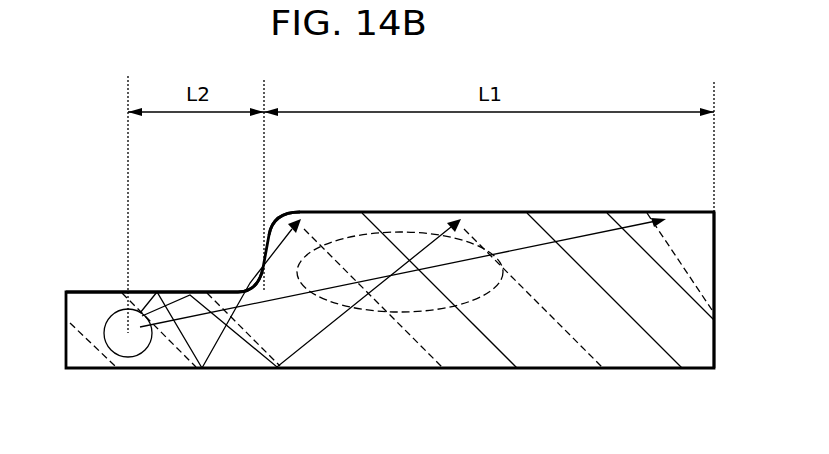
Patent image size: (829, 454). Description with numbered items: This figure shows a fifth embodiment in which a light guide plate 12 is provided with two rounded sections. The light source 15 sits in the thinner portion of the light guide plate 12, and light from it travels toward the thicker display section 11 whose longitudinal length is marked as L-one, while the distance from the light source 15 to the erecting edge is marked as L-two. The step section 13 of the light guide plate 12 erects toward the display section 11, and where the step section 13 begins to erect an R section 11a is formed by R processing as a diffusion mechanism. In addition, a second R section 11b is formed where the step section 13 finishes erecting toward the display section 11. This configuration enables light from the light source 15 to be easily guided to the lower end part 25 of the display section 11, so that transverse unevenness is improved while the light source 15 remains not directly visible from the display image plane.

The display section 11 is at (608, 211).
The R section 11a is at (258, 288).
The R section 11b is at (273, 210).
The light guide plate 12 is at (714, 258).
The step section 13 is at (98, 291).
The light source 15 is at (103, 324).
The lower end part 25 is at (432, 234).